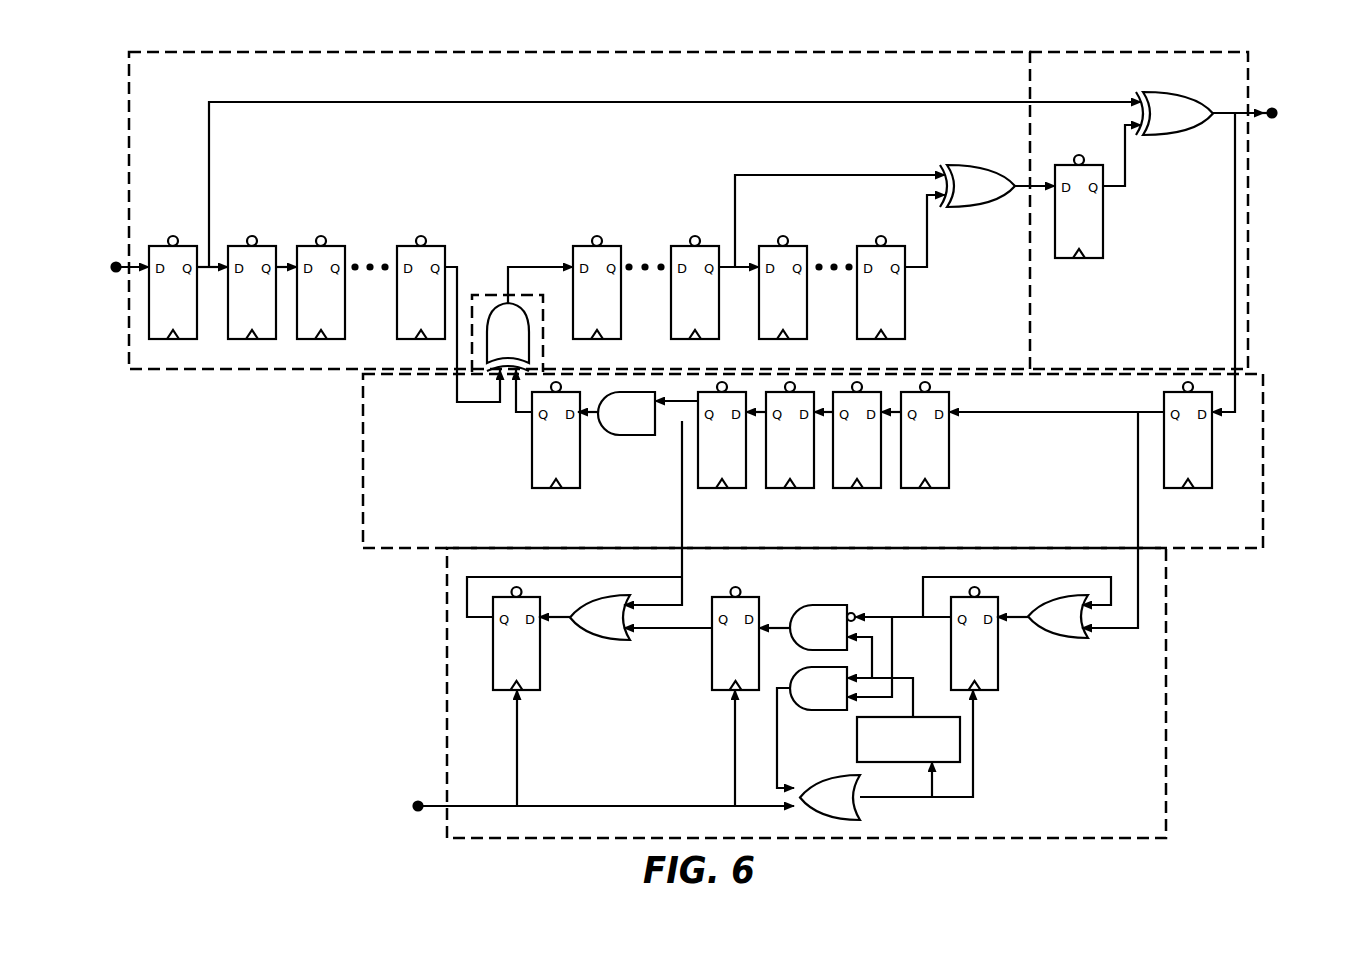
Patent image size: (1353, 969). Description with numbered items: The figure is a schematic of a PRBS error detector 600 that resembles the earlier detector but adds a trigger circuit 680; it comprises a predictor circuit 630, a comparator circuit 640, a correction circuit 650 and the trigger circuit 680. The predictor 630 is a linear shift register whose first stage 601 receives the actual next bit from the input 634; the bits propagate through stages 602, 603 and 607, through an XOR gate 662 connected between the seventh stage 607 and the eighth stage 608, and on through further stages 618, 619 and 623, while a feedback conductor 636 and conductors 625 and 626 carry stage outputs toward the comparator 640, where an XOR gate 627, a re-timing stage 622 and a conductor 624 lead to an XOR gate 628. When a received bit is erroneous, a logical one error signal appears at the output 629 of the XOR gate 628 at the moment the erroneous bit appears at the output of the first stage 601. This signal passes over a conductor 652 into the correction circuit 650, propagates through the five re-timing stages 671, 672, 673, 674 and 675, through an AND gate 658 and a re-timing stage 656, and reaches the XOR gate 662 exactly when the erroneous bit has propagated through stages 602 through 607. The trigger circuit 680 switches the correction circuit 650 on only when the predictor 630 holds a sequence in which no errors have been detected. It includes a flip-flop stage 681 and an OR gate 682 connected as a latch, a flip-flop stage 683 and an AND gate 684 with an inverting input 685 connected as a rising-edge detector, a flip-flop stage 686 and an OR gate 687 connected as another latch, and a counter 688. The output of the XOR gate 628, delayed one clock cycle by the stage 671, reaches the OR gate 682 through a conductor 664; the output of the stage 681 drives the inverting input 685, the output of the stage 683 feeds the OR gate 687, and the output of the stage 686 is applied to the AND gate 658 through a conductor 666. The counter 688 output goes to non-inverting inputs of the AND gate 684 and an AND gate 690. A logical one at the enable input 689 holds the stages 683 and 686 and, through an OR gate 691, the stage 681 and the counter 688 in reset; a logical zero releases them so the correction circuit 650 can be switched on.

The PRBS error detector 600 is at (272, 692).
The first stage of the linear shift register 601 is at (157, 248).
The linear shift register stage 602 is at (237, 248).
The linear shift register stage 603 is at (306, 248).
The seventh shift register stage 607 is at (406, 248).
The eighth shift register stage 608 is at (583, 248).
The flip-flop Q18 618 is at (681, 248).
The flip-flop Q19 619 is at (769, 248).
The flip-flop 622 is at (1066, 168).
The flip-flop Q23 623 is at (866, 248).
The connection line 624 is at (1125, 168).
The connection line 625 is at (840, 175).
The connection line 626 is at (927, 234).
The XOR gate 627 is at (983, 170).
The XOR gate 628 is at (1196, 132).
The output 629 is at (1272, 108).
The predictor circuit 630 is at (129, 102).
The input 634 is at (116, 262).
The feedback line 636 is at (376, 102).
The comparator circuit 640 is at (1248, 245).
The correction circuit 650 is at (363, 455).
The connection line 652 is at (1235, 305).
The re-timing stage 656 is at (532, 450).
The AND gate 658 is at (615, 428).
The XOR gate 662 is at (497, 312).
The conductor 664 is at (1138, 468).
The conductor 666 is at (682, 508).
The re-timing stage 671 is at (1202, 488).
The re-timing stage 672 is at (938, 488).
The re-timing stage 673 is at (870, 488).
The re-timing stage 674 is at (803, 488).
The re-timing stage 675 is at (735, 488).
The trigger circuit 680 is at (447, 665).
The flip-flop stage 681 is at (987, 690).
The OR gate 682 is at (1063, 638).
The flip-flop stage 683 is at (722, 690).
The AND gate 684 is at (824, 612).
The inverting input 685 is at (855, 613).
The flip-flop stage 686 is at (503, 690).
The OR gate 687 is at (604, 640).
The counter 688 is at (935, 717).
The enable input 689 is at (418, 800).
The AND gate 690 is at (823, 710).
The OR gate 691 is at (855, 815).